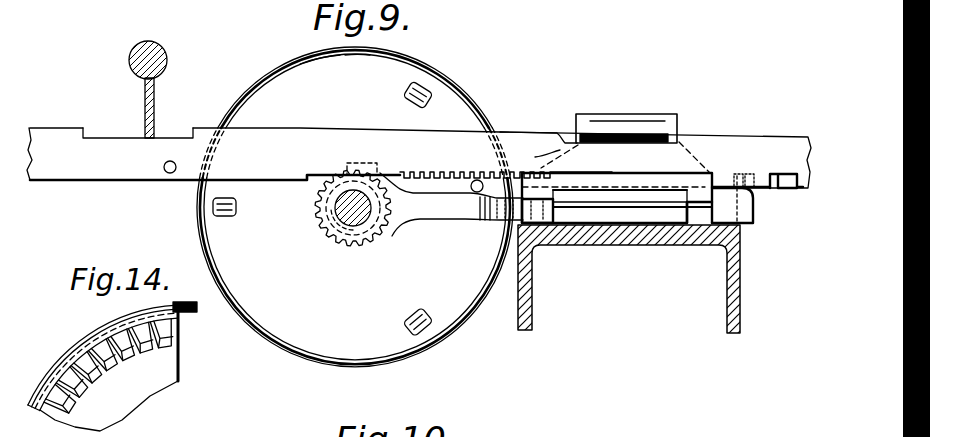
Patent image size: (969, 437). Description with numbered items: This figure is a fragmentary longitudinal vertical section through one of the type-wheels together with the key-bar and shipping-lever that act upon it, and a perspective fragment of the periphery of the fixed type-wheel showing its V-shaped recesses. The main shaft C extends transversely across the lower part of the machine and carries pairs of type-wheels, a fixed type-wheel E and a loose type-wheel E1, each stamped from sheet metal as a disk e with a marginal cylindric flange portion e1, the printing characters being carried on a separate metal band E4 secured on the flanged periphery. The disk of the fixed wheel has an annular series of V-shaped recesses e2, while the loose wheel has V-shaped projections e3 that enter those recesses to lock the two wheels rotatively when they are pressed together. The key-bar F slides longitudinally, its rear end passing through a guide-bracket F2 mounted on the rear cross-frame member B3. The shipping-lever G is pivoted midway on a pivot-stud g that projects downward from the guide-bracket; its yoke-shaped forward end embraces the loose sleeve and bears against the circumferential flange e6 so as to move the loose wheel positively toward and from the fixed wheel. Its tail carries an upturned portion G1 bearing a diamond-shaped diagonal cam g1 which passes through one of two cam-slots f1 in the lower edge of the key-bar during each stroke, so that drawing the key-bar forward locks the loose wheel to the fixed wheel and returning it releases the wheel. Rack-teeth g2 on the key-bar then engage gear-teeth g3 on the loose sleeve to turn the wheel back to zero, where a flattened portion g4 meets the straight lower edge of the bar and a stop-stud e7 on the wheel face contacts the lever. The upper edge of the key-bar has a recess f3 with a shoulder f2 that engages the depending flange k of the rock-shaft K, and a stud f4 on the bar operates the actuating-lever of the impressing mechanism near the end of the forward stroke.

In FIG. 9, the key-bar F is at (419, 158).
In FIG. 9, the cam-slot f1 is at (781, 173).
In FIG. 9, the shoulder f2 is at (193, 128).
In FIG. 9, the recess f3 is at (107, 137).
In FIG. 9, the stud f4 is at (168, 173).
In FIG. 9, the guide-bracket F2 is at (624, 113).
In FIG. 9, the rock-shaft K is at (166, 58).
In FIG. 9, the flange k is at (154, 97).
In FIG. 14, the type-wheel E is at (112, 366).
In FIG. 9, the type-wheel E1 is at (355, 207).
In FIG. 9, the band E4 is at (456, 328).
In FIG. 9, the disk e is at (320, 78).
In FIG. 9, the cylindric flange portion e1 is at (355, 56).
In FIG. 14, the V-shaped recesses e2 is at (108, 368).
In FIG. 9, the V-shaped projections e3 is at (425, 104).
In FIG. 9, the circumferential flange e6 is at (326, 223).
In FIG. 9, the stop-stud e7 is at (478, 180).
In FIG. 9, the main shaft C is at (340, 240).
In FIG. 9, the shipping-lever G is at (430, 219).
In FIG. 9, the upturned portion G1 is at (748, 205).
In FIG. 9, the pivot-stud g is at (544, 226).
In FIG. 9, the cam g1 is at (757, 189).
In FIG. 9, the rack-teeth g2 is at (452, 186).
In FIG. 9, the gear-teeth g3 is at (373, 238).
In FIG. 9, the flattened portion g4 is at (330, 175).
In FIG. 9, the transverse frame member B3 is at (644, 241).